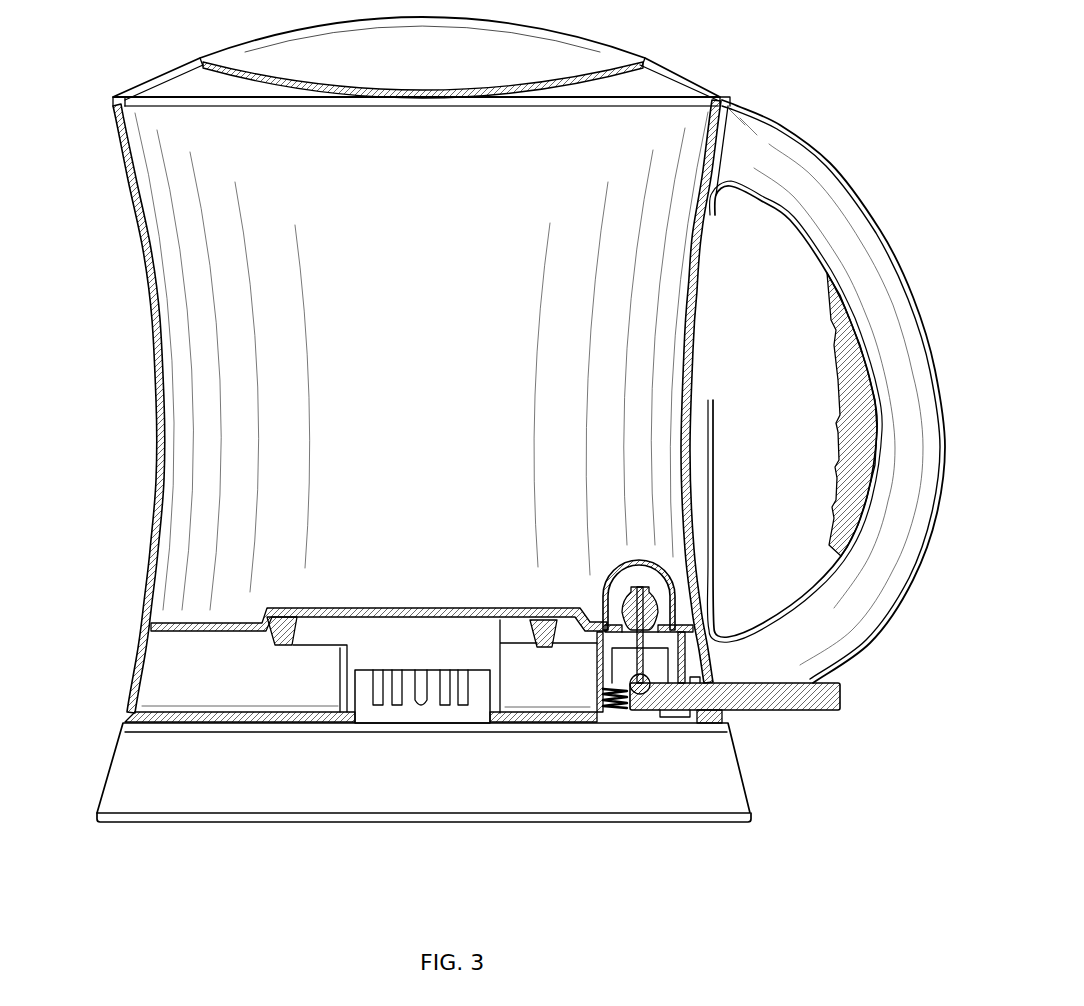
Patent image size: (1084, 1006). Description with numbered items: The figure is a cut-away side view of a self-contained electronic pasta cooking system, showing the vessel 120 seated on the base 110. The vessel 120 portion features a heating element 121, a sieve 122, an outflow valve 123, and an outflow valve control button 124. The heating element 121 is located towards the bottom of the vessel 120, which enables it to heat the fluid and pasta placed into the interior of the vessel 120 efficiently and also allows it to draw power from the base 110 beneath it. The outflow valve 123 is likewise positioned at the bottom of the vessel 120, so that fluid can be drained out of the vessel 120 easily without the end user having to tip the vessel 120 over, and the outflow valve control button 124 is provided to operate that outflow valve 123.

The base 110 is at (126, 765).
The vessel 120 is at (156, 392).
The heating element 121 is at (364, 688).
The sieve 122 is at (655, 558).
The outflow valve 123 is at (612, 710).
The outflow valve control button 124 is at (840, 693).